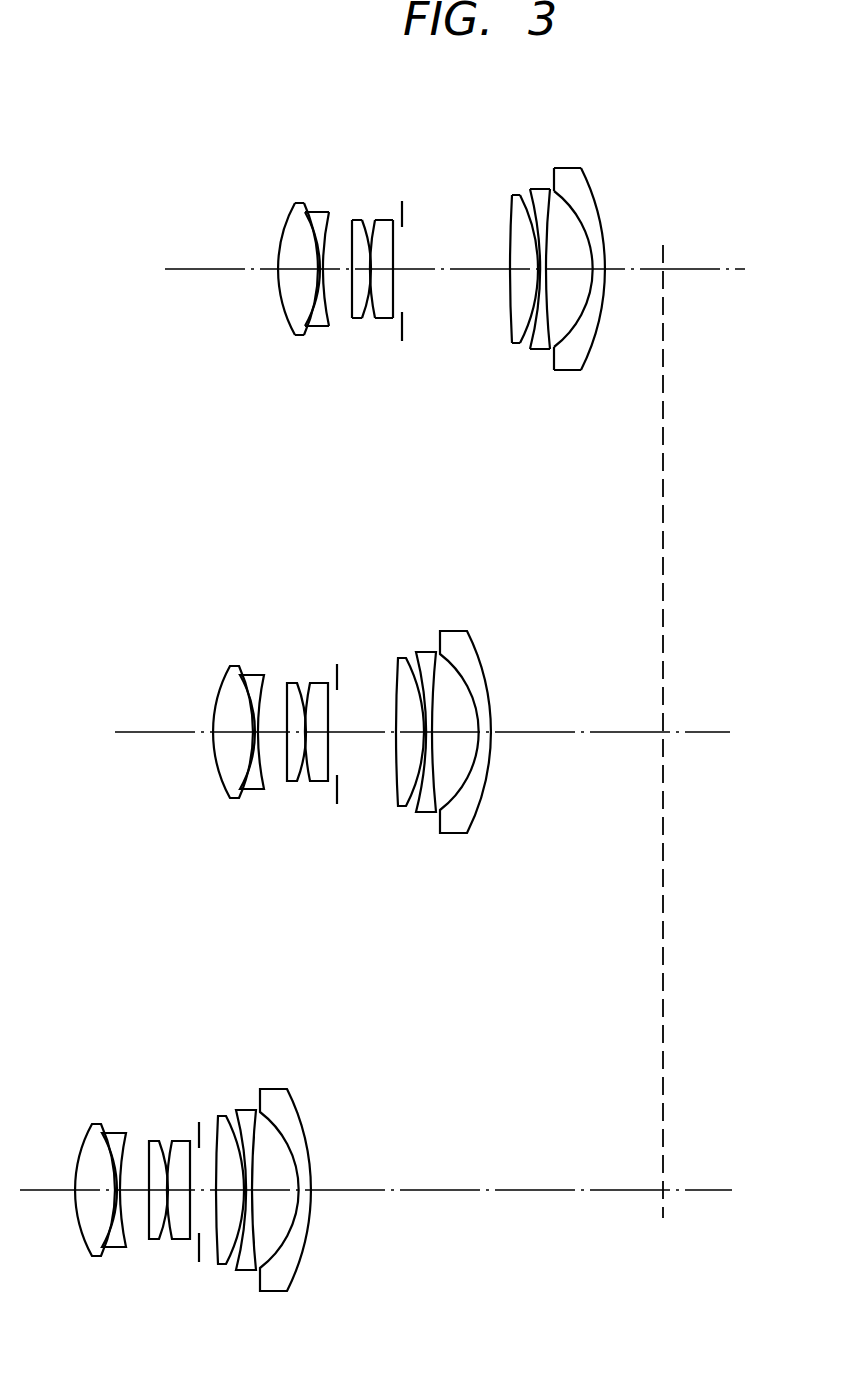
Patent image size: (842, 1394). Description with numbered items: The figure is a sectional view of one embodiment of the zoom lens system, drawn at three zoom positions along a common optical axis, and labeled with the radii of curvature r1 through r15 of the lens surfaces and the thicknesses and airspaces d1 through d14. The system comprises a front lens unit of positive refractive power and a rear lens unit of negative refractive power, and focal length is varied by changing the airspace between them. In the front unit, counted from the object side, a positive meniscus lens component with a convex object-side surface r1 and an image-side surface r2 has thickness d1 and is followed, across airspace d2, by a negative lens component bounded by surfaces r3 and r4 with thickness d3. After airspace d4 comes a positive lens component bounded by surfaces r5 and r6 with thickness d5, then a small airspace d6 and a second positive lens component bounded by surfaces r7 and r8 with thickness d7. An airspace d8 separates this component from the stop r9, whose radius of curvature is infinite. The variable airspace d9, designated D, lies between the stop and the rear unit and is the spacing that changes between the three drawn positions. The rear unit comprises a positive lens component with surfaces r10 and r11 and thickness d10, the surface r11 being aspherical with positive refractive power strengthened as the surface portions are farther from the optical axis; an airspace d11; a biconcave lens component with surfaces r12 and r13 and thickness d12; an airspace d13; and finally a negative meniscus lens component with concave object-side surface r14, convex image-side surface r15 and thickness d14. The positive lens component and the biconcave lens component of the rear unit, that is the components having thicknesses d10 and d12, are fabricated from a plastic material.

The radius of curvature of first lens surface r1 is at (282, 230).
The radius of curvature of second lens surface r2 is at (300, 222).
The radius of curvature of third lens surface r3 is at (318, 215).
The radius of curvature of fourth lens surface r4 is at (323, 215).
The radius of curvature of fifth lens surface r5 is at (350, 228).
The radius of curvature of sixth lens surface r6 is at (358, 222).
The radius of curvature of seventh lens surface r7 is at (374, 222).
The radius of curvature of eighth lens surface r8 is at (385, 222).
The stop r9 is at (402, 202).
The radius of curvature of tenth lens surface r10 is at (510, 222).
The radius of curvature of eleventh lens surface r11 is at (522, 218).
The radius of curvature of twelfth lens surface r12 is at (537, 197).
The radius of curvature of thirteenth lens surface r13 is at (545, 187).
The radius of curvature of fourteenth lens surface r14 is at (563, 168).
The radius of curvature of fifteenth lens surface r15 is at (592, 188).
The thickness of first lens component d1 is at (283, 289).
The airspace between first and second lens components d2 is at (302, 290).
The thickness of second lens component d3 is at (314, 328).
The airspace between second and third lens components d4 is at (334, 328).
The thickness of third lens component d5 is at (353, 322).
The airspace between third and fourth lens components d6 is at (378, 330).
The thickness of fourth lens component d7 is at (391, 325).
The airspace between fourth lens component and stop d8 is at (400, 305).
The variable airspace between stop and rear lens unit d9 is at (437, 275).
The thickness of fifth lens component d10 is at (512, 283).
The airspace between fifth and sixth lens components d11 is at (516, 316).
The thickness of sixth lens component d12 is at (541, 338).
The airspace between sixth and seventh lens components d13 is at (566, 275).
The thickness of seventh lens component d14 is at (598, 305).